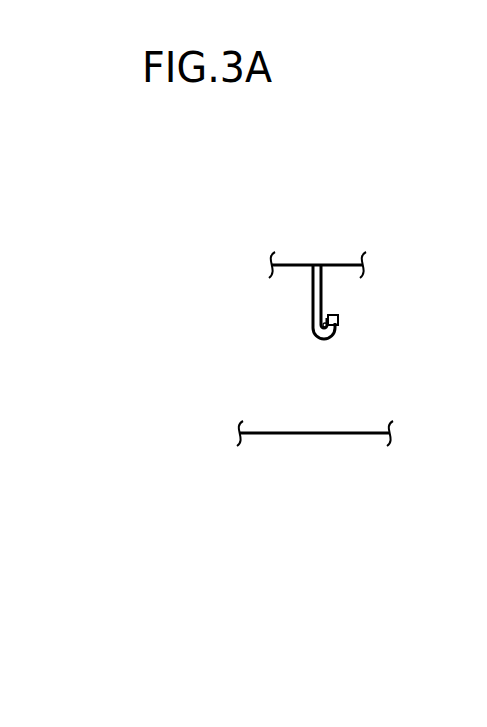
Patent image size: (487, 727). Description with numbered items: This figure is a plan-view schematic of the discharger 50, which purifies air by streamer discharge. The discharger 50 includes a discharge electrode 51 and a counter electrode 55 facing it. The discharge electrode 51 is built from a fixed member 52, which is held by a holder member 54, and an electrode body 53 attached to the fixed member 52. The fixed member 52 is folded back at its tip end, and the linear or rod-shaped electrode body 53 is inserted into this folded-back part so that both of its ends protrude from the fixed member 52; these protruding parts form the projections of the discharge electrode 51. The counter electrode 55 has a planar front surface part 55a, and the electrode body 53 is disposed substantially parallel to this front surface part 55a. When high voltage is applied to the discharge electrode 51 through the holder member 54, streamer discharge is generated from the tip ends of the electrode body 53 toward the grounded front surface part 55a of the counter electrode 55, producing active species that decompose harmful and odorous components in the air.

The discharger 50 is at (377, 225).
The discharge electrode 51 is at (423, 285).
The fixed member 52 is at (322, 289).
The electrode body 53 is at (329, 327).
The holder member 54 is at (292, 267).
The counter electrode 55 is at (295, 465).
The front surface part 55a is at (250, 433).